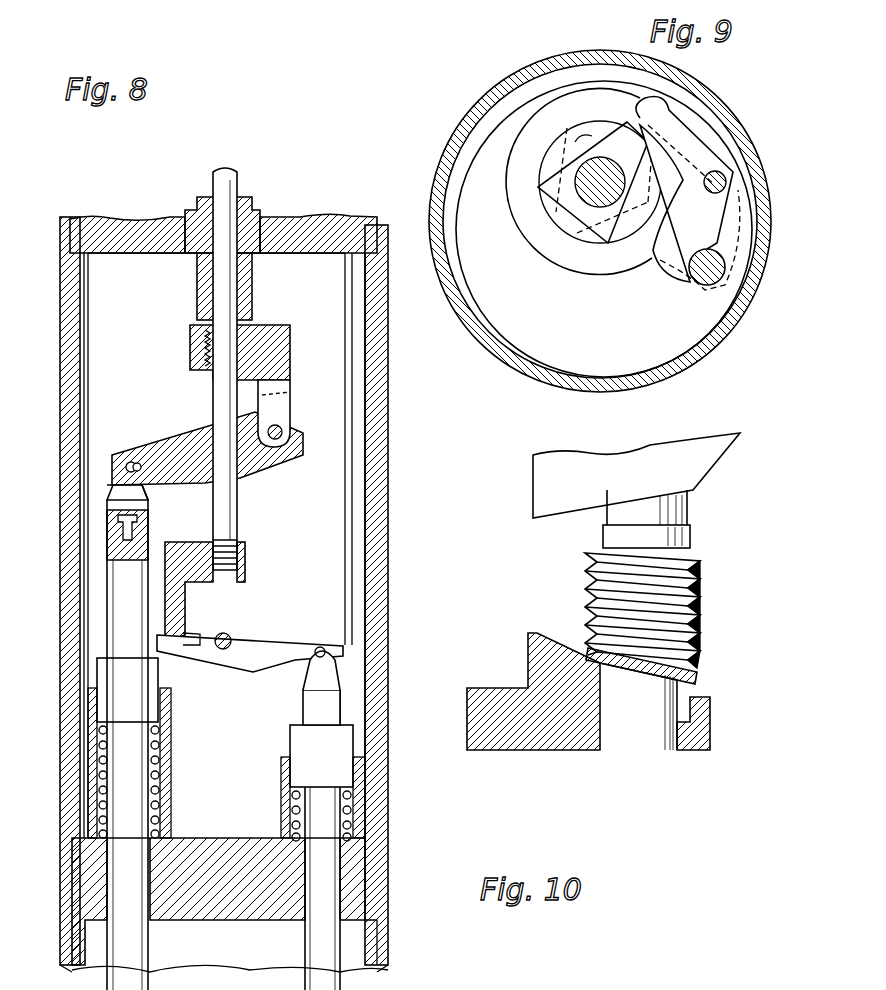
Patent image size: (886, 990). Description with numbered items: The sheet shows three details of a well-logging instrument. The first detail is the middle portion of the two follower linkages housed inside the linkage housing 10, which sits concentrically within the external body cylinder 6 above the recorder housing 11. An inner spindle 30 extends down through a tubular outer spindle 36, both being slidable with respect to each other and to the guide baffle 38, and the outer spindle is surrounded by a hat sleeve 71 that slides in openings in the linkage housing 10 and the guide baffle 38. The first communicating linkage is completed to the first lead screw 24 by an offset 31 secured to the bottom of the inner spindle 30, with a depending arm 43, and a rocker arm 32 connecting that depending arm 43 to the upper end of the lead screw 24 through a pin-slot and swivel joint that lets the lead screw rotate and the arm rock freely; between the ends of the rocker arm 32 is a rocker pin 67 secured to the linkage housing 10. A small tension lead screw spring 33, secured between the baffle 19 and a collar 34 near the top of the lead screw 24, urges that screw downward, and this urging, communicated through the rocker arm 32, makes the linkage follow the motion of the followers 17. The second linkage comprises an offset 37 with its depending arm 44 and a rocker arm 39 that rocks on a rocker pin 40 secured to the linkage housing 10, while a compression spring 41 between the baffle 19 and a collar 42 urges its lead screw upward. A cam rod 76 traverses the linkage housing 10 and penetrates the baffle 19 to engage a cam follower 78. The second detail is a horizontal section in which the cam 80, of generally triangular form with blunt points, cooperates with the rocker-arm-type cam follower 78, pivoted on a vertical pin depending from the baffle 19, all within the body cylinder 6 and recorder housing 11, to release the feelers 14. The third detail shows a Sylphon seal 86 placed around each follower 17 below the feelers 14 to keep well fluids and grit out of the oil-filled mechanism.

In FIG. 8, the external body cylinder 6 is at (388, 543).
In FIG. 9, the external body cylinder 6 is at (687, 362).
In FIG. 8, the linkage housing 10 is at (370, 512).
In FIG. 9, the recorder housing 11 is at (707, 330).
In FIG. 10, the leaf spring feelers 14 is at (717, 453).
In FIG. 10, the followers 17 is at (673, 733).
In FIG. 8, the baffle 19 is at (233, 853).
In FIG. 8, the first lead screw 24 is at (117, 767).
In FIG. 8, the inner spindle 30 is at (228, 283).
In FIG. 8, the offset 31 is at (245, 556).
In FIG. 8, the rocker arm 32 is at (273, 635).
In FIG. 8, the tension lead screw spring 33 is at (290, 803).
In FIG. 8, the collar 34 is at (297, 743).
In FIG. 8, the tubular outer spindle 36 is at (205, 280).
In FIG. 8, the offset 37 is at (275, 325).
In FIG. 8, the guide baffle 38 is at (322, 233).
In FIG. 8, the rocker arm 39 is at (157, 445).
In FIG. 8, the rocker pin 40 is at (216, 420).
In FIG. 8, the compression spring 41 is at (107, 743).
In FIG. 8, the collar 42 is at (102, 680).
In FIG. 8, the depending arm 43 is at (178, 595).
In FIG. 8, the depending arm 44 is at (287, 390).
In FIG. 8, the rocker pin 67 is at (222, 652).
In FIG. 8, the hat sleeve 71 is at (262, 210).
In FIG. 8, the cam rod 76 is at (347, 418).
In FIG. 9, the cam rod 76 is at (725, 267).
In FIG. 9, the cam follower 78 is at (715, 213).
In FIG. 9, the cam 80 is at (628, 125).
In FIG. 10, the Sylphon seals 86 is at (693, 636).